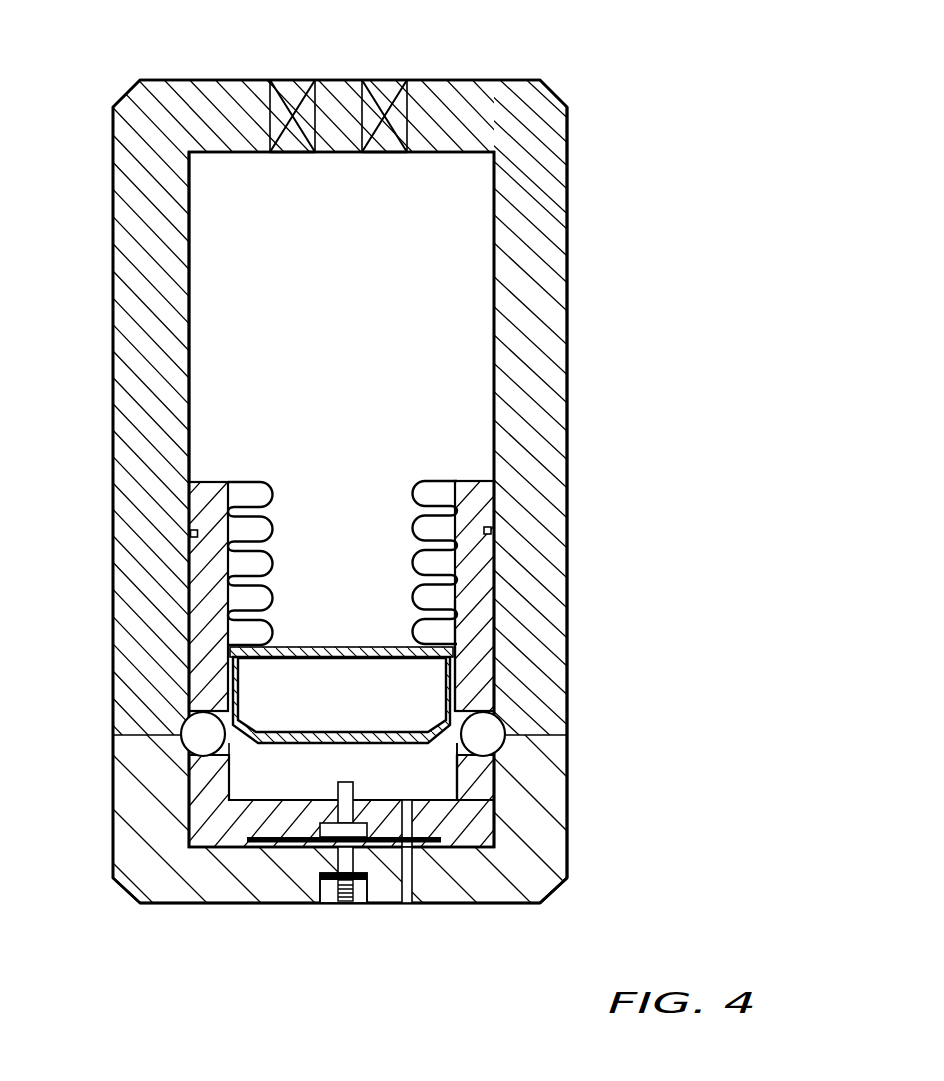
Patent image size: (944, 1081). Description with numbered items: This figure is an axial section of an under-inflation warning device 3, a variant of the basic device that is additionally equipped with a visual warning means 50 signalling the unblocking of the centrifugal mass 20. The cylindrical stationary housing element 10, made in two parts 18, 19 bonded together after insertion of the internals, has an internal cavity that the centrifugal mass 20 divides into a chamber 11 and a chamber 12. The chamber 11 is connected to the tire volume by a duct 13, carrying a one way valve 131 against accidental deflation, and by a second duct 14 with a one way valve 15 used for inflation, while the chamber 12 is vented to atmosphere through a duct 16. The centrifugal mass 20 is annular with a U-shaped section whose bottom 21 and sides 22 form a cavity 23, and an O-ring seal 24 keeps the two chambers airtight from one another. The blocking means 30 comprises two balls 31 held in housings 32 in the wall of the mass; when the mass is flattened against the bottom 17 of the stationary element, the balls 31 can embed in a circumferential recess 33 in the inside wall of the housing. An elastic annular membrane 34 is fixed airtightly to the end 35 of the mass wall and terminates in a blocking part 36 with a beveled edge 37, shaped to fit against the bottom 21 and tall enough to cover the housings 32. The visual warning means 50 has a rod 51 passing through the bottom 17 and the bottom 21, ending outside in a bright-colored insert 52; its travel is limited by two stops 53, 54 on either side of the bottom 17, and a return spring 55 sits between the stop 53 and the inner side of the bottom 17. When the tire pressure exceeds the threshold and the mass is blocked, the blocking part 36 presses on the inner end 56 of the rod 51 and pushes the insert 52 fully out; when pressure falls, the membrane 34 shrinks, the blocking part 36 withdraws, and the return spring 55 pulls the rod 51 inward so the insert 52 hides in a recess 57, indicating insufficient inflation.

The under-inflation warning device 3 is at (572, 79).
The stationary housing element 10 is at (556, 168).
The chamber 11 is at (482, 313).
The chamber 12 is at (243, 775).
The duct 13 is at (375, 95).
The one way valve 131 is at (396, 152).
The second duct 14 is at (305, 152).
The one way valve 15 is at (283, 103).
The duct 16 is at (411, 905).
The bottom 17 is at (560, 879).
The part 18 is at (540, 218).
The part 19 is at (556, 843).
The centrifugal mass 20 is at (456, 647).
The bottom 21 is at (203, 825).
The sides 22 is at (494, 600).
The cavity 23 is at (447, 355).
The O-ring seal 24 is at (491, 532).
The blocking means 30 is at (355, 630).
The balls 31 is at (478, 733).
The housings 32 is at (498, 756).
The circumferential recess 33 is at (560, 726).
The elastic annular membrane 34 is at (428, 490).
The end 35 is at (467, 479).
The blocking part 36 is at (286, 647).
The beveled edge 37 is at (613, 815).
The visual warning means 50 is at (326, 933).
The rod 51 is at (351, 785).
The bright-colored insert 52 is at (345, 905).
The stop 53 is at (366, 824).
The stop 54 is at (362, 903).
The return spring 55 is at (340, 847).
The inner end 56 is at (338, 800).
The recess 57 is at (323, 894).